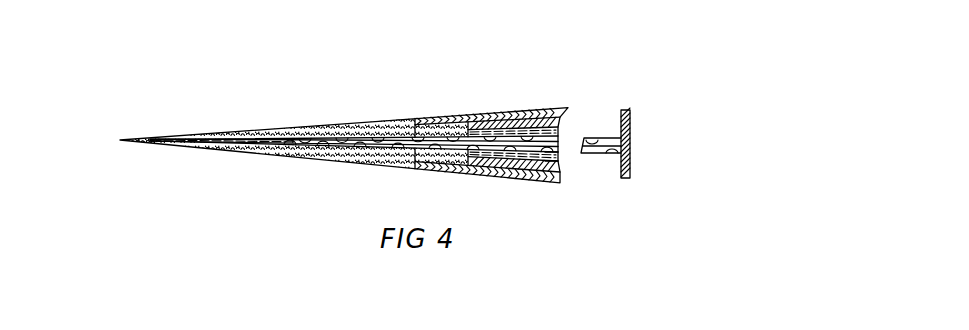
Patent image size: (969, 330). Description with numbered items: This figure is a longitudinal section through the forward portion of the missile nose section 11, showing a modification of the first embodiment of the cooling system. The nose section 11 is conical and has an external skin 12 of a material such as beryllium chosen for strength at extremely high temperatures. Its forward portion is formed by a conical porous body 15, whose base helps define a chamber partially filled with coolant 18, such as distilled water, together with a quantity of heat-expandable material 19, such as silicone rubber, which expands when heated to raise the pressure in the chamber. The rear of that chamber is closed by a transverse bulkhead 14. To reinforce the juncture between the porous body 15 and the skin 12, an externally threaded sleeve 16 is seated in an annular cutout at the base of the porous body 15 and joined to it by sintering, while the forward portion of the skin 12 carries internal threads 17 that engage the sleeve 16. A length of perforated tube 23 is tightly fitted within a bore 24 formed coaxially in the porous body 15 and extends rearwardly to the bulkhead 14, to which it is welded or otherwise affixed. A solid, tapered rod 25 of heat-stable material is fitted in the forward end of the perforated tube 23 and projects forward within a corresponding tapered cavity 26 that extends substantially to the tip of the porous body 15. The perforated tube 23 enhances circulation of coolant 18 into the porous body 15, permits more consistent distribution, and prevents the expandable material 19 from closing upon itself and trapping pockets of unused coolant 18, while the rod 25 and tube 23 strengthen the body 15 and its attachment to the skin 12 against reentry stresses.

The nose section 11 is at (365, 126).
The external skin 12 is at (452, 118).
The bulkhead 14 is at (630, 148).
The porous body 15 is at (297, 127).
The externally threaded sleeve 16 is at (469, 131).
The internal threads 17 is at (417, 130).
The coolant 18 is at (552, 158).
The heat-expandable material 19 is at (562, 118).
The perforated tube 23 is at (528, 156).
The bore 24 is at (368, 142).
The tapered rod 25 is at (220, 133).
The tapered cavity 26 is at (189, 140).